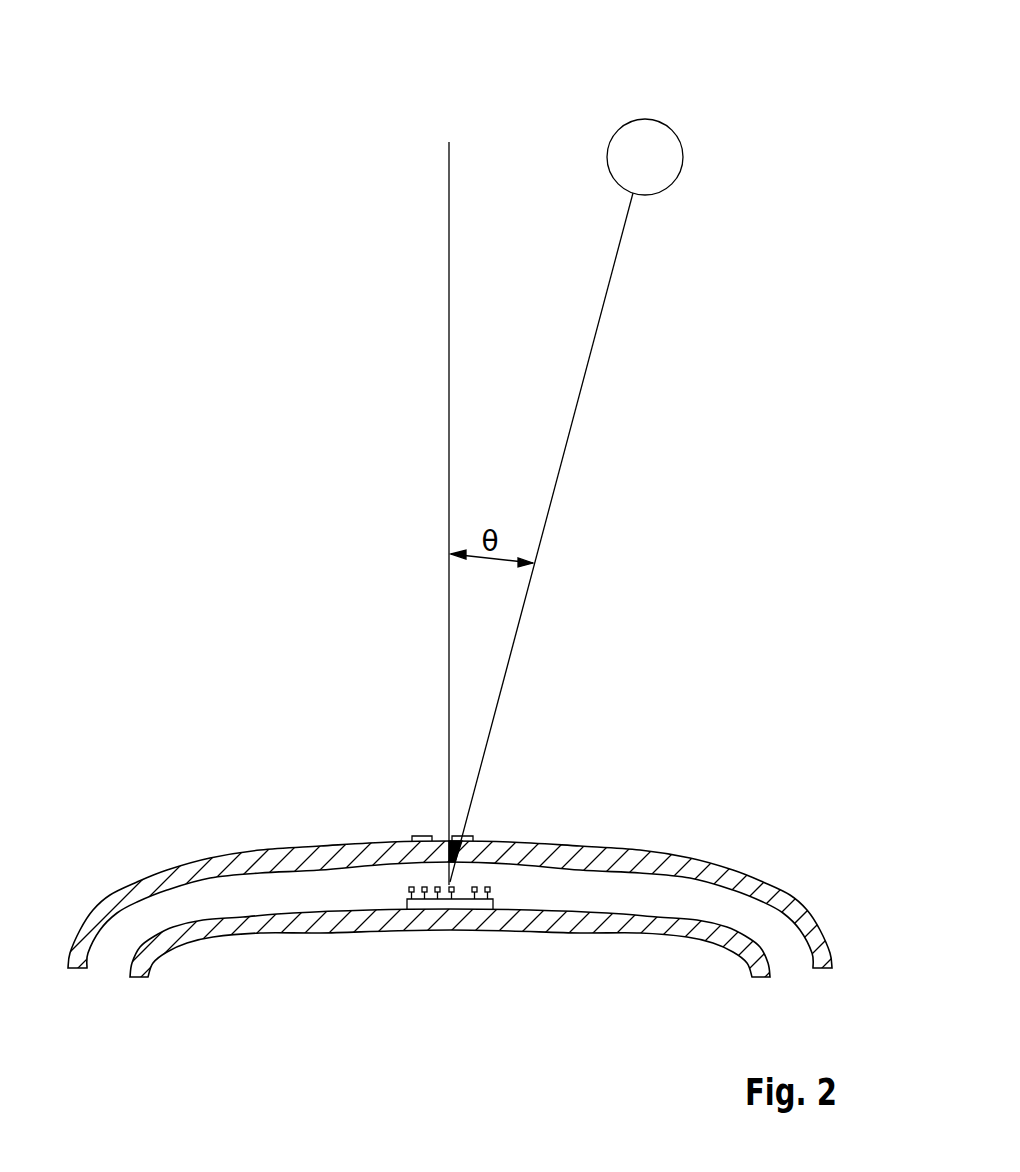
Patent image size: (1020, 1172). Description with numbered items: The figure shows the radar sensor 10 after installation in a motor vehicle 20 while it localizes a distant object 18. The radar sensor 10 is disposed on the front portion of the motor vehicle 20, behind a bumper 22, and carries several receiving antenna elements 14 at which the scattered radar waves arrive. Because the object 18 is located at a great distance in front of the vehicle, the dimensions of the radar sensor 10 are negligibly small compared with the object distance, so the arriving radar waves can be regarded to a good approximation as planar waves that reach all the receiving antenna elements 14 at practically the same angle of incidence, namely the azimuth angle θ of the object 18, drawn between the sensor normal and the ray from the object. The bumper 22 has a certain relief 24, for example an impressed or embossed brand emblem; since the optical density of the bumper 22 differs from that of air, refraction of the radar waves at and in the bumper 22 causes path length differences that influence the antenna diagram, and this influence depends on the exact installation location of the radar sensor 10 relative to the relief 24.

The radar sensor 10 is at (447, 911).
The receiving antenna elements 14 is at (408, 890).
The object 18 is at (646, 119).
The motor vehicle 20 is at (655, 942).
The bumper 22 is at (708, 858).
The relief 24 is at (418, 835).